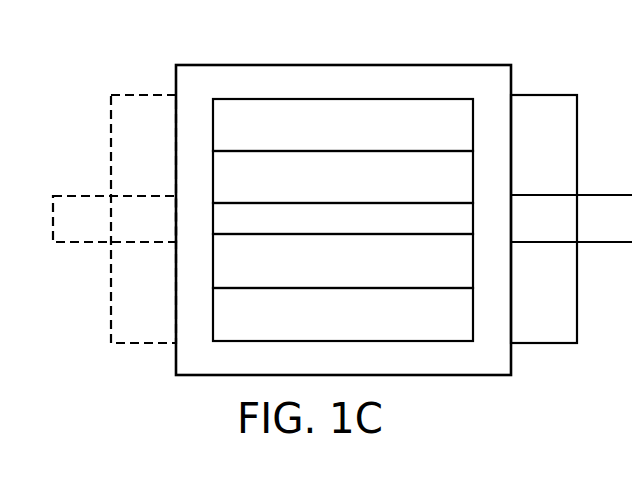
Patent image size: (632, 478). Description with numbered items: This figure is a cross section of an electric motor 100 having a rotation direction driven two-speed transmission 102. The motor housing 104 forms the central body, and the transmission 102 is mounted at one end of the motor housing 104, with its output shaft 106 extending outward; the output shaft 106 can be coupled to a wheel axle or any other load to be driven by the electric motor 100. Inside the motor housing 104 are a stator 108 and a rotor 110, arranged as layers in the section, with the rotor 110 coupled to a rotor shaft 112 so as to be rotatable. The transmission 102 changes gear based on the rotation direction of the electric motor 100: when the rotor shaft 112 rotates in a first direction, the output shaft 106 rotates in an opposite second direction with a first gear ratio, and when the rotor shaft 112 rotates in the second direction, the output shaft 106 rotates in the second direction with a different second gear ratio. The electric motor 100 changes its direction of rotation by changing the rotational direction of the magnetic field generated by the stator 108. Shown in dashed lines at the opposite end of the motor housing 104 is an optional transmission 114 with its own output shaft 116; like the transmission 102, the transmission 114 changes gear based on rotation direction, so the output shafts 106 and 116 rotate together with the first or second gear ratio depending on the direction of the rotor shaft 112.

The electric motor 100 is at (457, 33).
The transmission 102 is at (557, 129).
The motor housing 104 is at (228, 89).
The output shaft 106 is at (597, 229).
The stator 108 is at (270, 129).
The rotor 110 is at (311, 185).
The rotor shaft 112 is at (353, 227).
The transmission 114 is at (159, 129).
The output shaft 116 is at (130, 229).